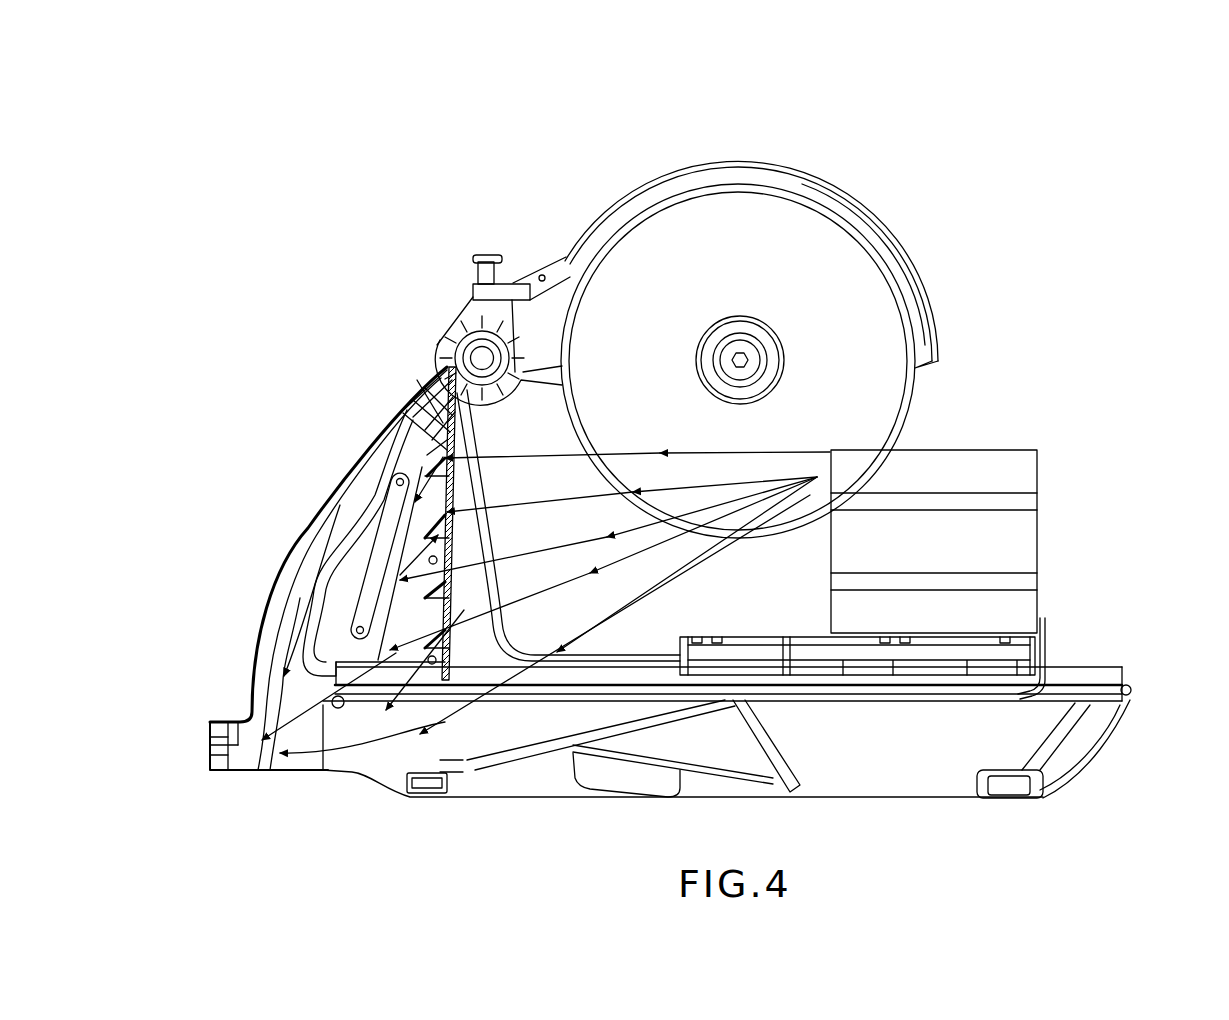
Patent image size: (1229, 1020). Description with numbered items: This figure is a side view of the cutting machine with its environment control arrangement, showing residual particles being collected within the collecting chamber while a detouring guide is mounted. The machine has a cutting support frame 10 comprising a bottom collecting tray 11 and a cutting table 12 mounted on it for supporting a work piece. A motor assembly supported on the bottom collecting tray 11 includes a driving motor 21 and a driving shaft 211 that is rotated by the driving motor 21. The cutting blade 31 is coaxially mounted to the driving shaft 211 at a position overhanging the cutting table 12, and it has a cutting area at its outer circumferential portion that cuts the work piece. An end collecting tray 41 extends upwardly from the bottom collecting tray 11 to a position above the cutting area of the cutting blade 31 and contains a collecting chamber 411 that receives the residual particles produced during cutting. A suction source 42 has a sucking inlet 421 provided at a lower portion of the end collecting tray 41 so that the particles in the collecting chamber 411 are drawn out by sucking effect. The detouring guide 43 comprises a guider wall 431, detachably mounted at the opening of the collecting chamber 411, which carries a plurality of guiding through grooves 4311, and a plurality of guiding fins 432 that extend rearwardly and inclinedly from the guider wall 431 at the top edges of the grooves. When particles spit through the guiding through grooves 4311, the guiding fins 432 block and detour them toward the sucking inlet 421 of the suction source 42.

The cutting support frame 10 is at (1133, 537).
The bottom collecting tray 11 is at (518, 713).
The cutting table 12 is at (1018, 652).
The driving motor 21 is at (483, 356).
The driving shaft 211 is at (741, 358).
The cutting blade 31 is at (865, 395).
The end collecting tray 41 is at (287, 562).
The collecting chamber 411 is at (392, 557).
The suction source 42 is at (207, 746).
The sucking inlet 421 is at (201, 740).
The detouring guide 43 is at (295, 207).
The guider wall 431 is at (413, 365).
The guiding fins 432 is at (400, 417).
The guiding through grooves 4311 is at (349, 378).